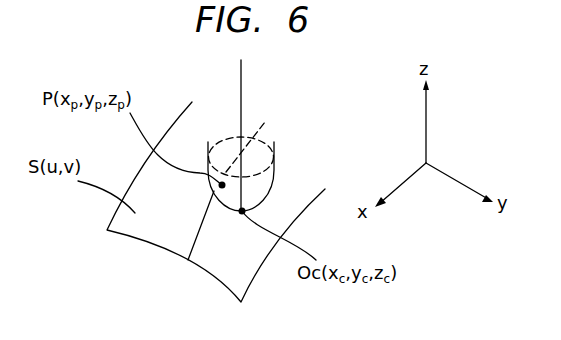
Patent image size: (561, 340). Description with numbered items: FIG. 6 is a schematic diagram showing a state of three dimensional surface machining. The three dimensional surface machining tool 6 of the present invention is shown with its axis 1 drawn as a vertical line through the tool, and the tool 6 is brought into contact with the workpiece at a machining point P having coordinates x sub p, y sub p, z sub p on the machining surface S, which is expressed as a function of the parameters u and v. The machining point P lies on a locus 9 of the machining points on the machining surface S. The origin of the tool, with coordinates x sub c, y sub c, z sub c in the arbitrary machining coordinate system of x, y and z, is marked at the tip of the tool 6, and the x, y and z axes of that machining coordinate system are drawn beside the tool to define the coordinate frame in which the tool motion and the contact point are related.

The axis of the tool 1 is at (241, 88).
The three dimensional surface machining tool 6 is at (274, 177).
The locus of the machining points 9 is at (195, 243).